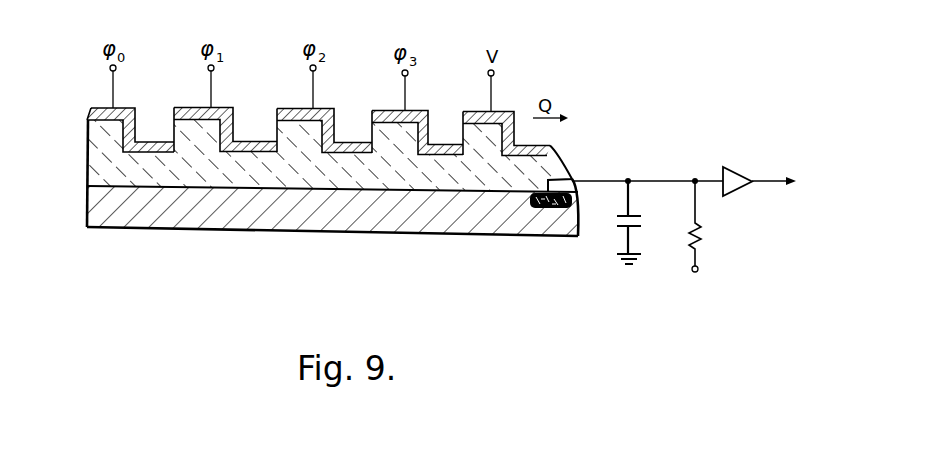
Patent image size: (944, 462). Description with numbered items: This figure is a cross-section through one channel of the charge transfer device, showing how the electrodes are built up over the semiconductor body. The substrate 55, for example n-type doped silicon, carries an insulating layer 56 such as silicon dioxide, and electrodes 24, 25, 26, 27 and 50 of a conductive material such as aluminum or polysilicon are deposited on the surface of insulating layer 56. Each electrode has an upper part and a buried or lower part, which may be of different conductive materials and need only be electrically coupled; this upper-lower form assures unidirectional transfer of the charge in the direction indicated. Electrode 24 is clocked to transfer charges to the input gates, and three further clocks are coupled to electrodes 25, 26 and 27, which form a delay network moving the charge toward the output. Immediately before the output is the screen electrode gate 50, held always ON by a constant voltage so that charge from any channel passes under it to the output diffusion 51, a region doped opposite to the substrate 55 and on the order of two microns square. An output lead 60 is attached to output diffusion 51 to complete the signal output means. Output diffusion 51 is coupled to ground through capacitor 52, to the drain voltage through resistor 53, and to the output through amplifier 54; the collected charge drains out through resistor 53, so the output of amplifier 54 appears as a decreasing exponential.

The electrode 24 is at (90, 124).
The electrode 25 is at (187, 119).
The electrode 26 is at (288, 119).
The electrode 27 is at (380, 121).
The screen electrode gate 50 is at (474, 121).
The output diffusion 51 is at (557, 236).
The capacitor 52 is at (636, 218).
The resistor 53 is at (697, 240).
The amplifier 54 is at (736, 170).
The substrate 55 is at (262, 233).
The insulating layer 56 is at (90, 177).
The output lead 60 is at (595, 181).